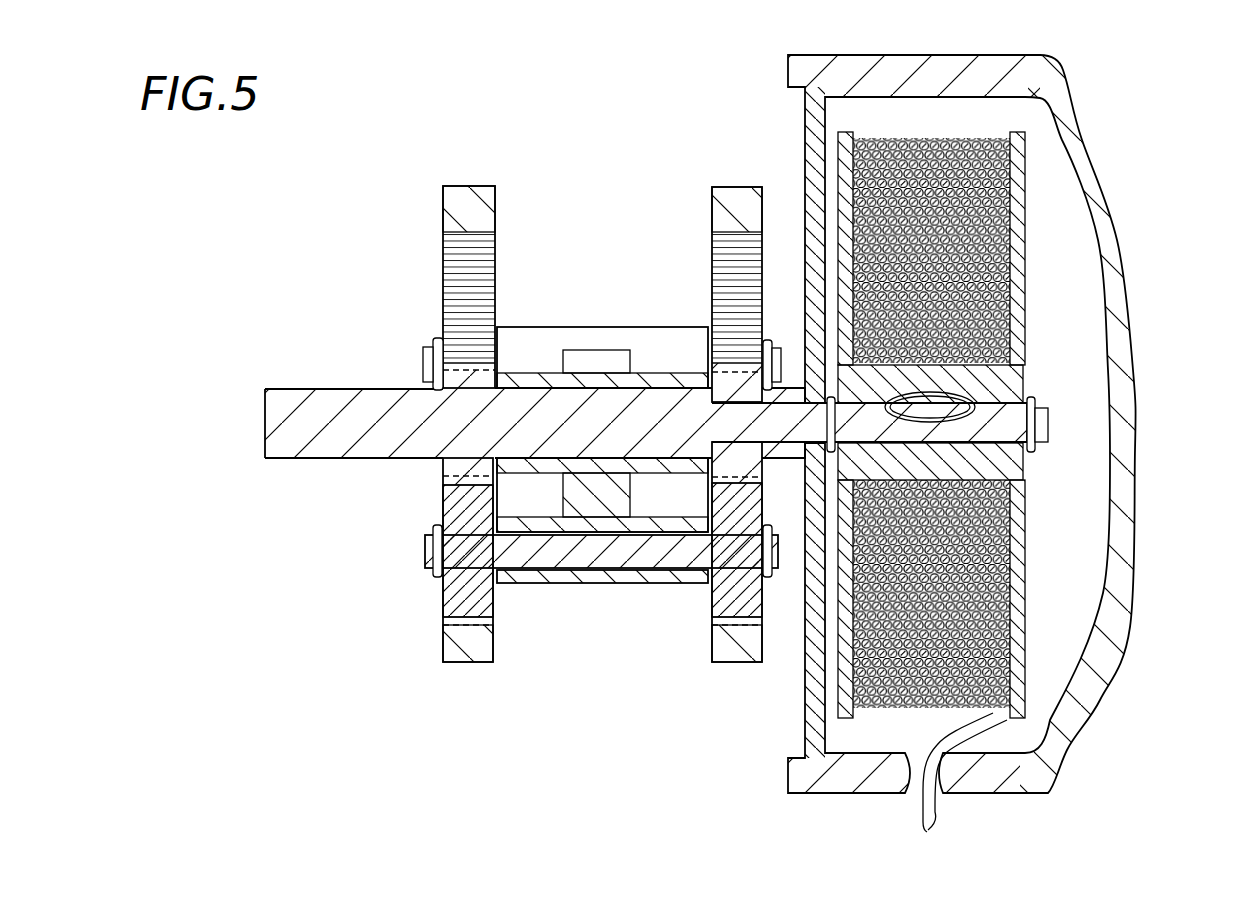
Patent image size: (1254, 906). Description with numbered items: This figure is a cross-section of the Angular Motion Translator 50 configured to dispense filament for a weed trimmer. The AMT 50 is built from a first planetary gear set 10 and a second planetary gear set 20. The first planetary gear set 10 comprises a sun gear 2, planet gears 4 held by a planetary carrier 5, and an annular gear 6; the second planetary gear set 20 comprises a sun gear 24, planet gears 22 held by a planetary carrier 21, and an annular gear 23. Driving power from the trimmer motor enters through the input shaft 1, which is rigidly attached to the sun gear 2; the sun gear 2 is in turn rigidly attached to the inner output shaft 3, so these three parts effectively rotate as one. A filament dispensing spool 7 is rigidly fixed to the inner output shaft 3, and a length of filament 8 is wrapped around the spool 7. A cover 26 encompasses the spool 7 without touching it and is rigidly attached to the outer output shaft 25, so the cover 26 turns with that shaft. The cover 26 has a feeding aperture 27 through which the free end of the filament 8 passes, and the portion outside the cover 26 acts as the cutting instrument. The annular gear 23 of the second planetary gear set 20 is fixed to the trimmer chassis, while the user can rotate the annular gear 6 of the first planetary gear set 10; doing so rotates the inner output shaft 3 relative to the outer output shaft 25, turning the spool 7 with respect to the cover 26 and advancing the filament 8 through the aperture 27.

The input shaft 1 is at (250, 443).
The sun gear 2 is at (460, 423).
The inner output shaft 3 is at (1048, 426).
The planet gears 4 is at (450, 597).
The planetary carrier 5 is at (505, 583).
The annular gear 6 is at (460, 195).
The spool 7 is at (1027, 187).
The filament 8 is at (938, 800).
The first planetary gear set 10 is at (481, 824).
The second planetary gear set 20 is at (746, 824).
The planetary carrier 21 is at (690, 583).
The planet gears 22 is at (758, 600).
The annular gear 23 is at (727, 193).
The sun gear 24 is at (757, 461).
The outer output shaft 25 is at (788, 390).
The cover 26 is at (1133, 313).
The feeding aperture 27 is at (910, 790).
The Angular Motion Translator 50 is at (160, 223).